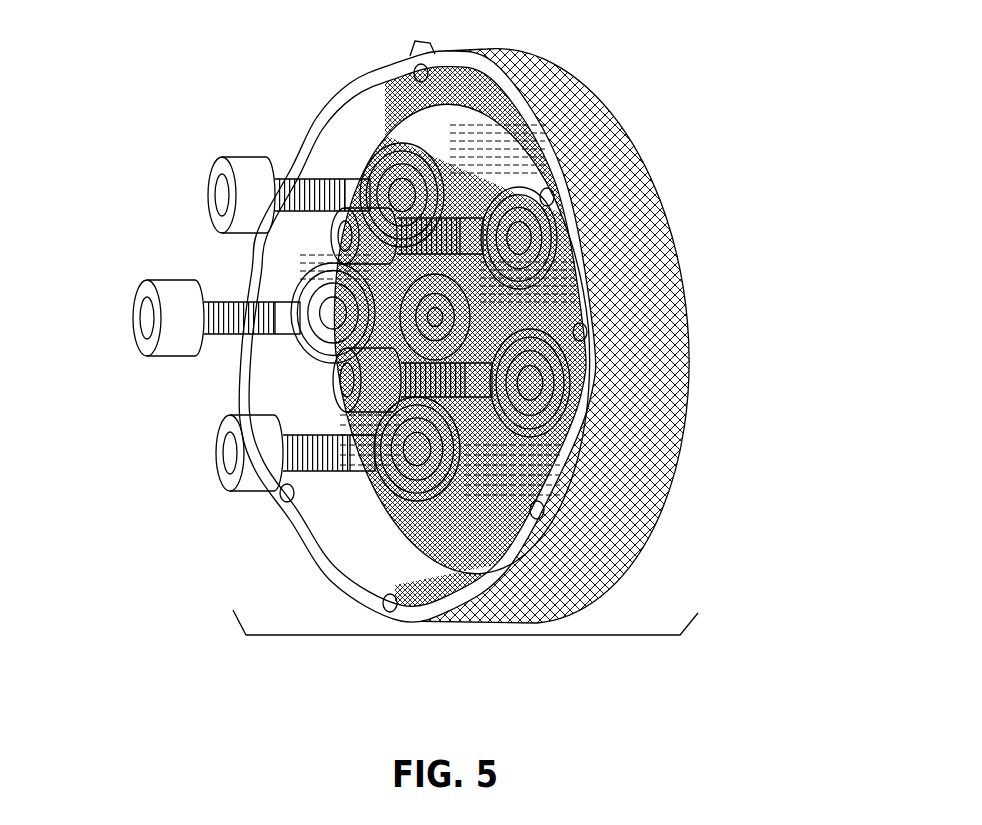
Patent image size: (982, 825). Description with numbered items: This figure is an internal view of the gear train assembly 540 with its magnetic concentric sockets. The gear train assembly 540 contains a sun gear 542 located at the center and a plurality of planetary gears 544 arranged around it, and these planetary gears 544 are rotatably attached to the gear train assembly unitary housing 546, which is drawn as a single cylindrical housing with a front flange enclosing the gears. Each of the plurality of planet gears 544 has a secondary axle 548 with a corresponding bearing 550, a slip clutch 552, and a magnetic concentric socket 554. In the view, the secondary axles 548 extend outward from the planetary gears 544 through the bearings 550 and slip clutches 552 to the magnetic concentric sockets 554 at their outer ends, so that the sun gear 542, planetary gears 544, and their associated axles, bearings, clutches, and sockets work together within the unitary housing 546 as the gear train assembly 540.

The gear train assembly 540 is at (440, 359).
The sun gear 542 is at (478, 318).
The planetary gears 544 is at (490, 485).
The gear train assembly unitary housing 546 is at (597, 133).
The secondary axles 548 is at (233, 331).
The bearings 550 is at (543, 190).
The slip clutches 552 is at (395, 160).
The magnetic concentric sockets 554 is at (183, 327).